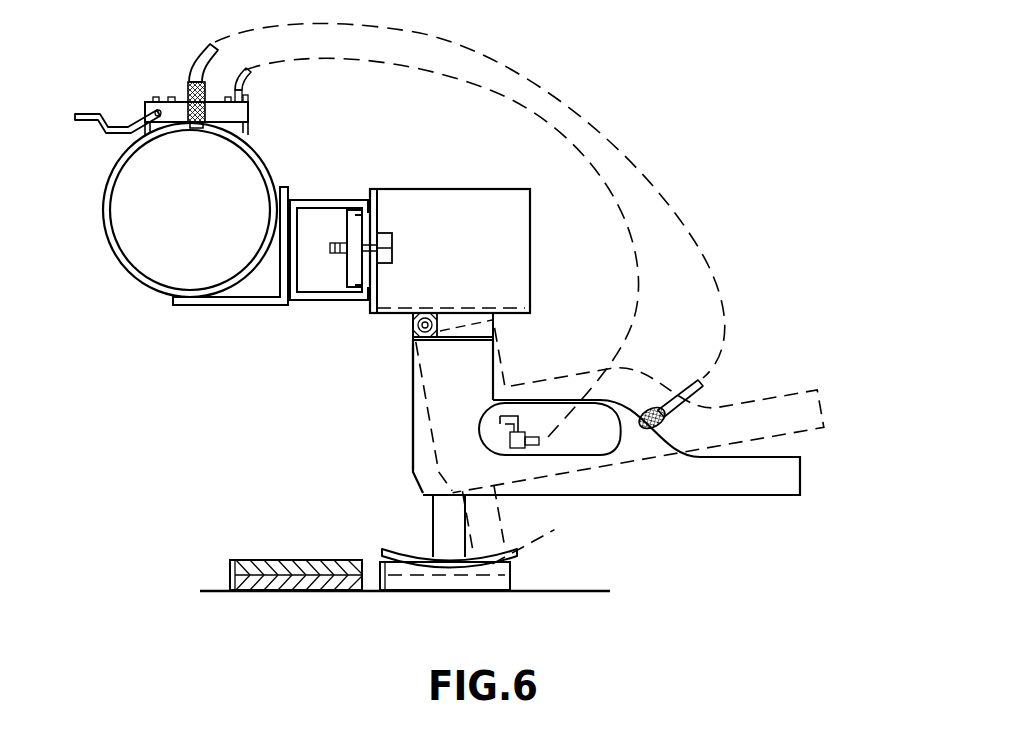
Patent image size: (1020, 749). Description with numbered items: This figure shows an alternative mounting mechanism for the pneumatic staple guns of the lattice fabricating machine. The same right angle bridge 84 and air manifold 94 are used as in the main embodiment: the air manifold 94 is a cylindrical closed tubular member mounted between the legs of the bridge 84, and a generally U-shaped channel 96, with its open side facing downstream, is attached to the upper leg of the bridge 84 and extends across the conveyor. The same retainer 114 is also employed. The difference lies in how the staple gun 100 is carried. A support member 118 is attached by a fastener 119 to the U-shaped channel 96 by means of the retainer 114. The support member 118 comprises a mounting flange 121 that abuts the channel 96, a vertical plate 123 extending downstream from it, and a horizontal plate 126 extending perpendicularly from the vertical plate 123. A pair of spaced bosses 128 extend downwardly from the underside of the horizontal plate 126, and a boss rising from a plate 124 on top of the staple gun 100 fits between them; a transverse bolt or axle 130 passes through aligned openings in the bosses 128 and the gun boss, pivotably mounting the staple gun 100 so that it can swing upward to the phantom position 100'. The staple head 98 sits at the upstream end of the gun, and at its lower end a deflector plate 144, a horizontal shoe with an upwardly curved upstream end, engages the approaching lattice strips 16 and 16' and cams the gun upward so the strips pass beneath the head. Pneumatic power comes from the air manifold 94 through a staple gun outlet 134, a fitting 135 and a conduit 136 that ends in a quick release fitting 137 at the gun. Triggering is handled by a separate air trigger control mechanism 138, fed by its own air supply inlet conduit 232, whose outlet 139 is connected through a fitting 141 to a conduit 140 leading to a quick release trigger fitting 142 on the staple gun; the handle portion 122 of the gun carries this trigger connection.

The lattice strips 16 is at (385, 566).
The lattice strips 16' is at (290, 541).
The right angle bridge 84 is at (285, 190).
The air manifold 94 is at (140, 283).
The U-shaped channel 96 is at (328, 302).
The staple head 98 is at (412, 402).
The staple gun 100 is at (361, 407).
The staple gun pivoted position 100' is at (407, 444).
The retainer 114 is at (353, 210).
The support member 118 is at (505, 198).
The fastener 119 is at (392, 249).
The mounting flange 121 is at (380, 207).
The handle 122 is at (768, 485).
The vertical plate 123 is at (447, 200).
The plate 124 is at (495, 333).
The horizontal plate 126 is at (528, 307).
The spaced bosses 128 is at (412, 335).
The transverse bolt or axle 130 is at (412, 327).
The staple gun outlet 134 is at (195, 126).
The fitting 135 is at (206, 100).
The conduit 136 is at (197, 62).
The quick release fitting 137 is at (648, 413).
The air trigger control mechanism 138 is at (145, 102).
The outlet 139 is at (156, 97).
The conduit 140 is at (249, 80).
The fitting 141 is at (231, 98).
The quick release trigger fitting 142 is at (513, 447).
The deflector plate 144 is at (398, 560).
The air supply inlet conduit 232 is at (80, 113).